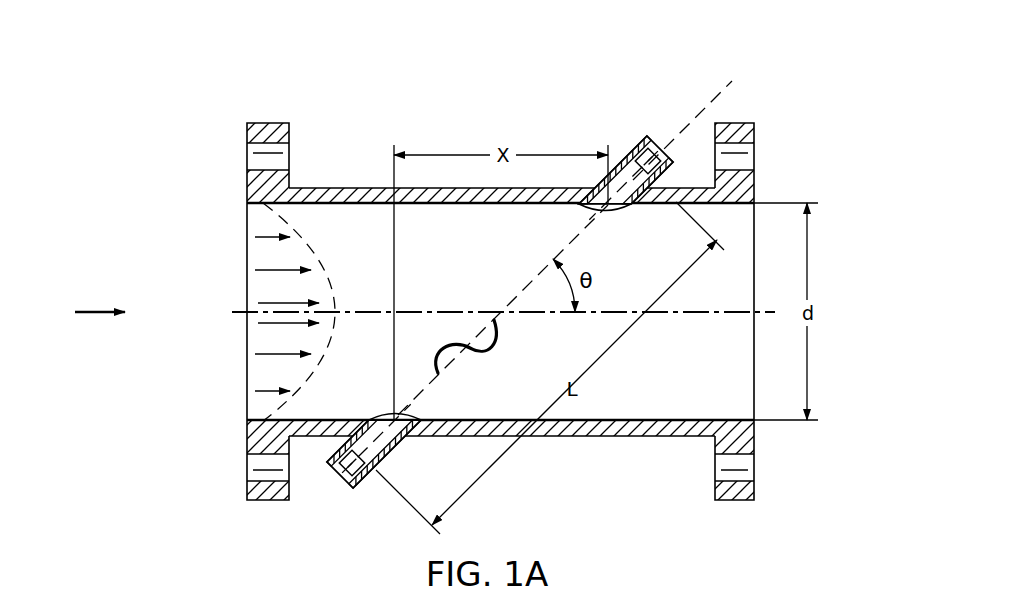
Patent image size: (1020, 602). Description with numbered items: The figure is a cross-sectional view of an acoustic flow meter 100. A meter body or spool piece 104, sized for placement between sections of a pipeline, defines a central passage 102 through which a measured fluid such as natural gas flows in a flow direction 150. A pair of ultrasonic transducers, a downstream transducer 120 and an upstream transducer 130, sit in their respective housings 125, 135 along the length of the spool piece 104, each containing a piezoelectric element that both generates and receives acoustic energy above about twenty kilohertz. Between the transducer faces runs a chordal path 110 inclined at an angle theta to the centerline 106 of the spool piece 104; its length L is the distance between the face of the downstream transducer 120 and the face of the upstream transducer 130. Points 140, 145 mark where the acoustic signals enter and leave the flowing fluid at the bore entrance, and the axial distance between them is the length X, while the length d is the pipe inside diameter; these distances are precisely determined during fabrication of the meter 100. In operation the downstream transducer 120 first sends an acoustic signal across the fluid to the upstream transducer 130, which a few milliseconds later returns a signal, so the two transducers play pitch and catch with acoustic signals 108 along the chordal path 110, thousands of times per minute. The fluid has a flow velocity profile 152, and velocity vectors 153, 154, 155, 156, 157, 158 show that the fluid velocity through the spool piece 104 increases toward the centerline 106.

The acoustic flow meter 100 is at (732, 56).
The central passage 102 is at (500, 312).
The spool piece 104 is at (268, 123).
The centerline 106 is at (693, 316).
The acoustic signals 108 is at (484, 350).
The chordal path 110 is at (522, 291).
The downstream transducer 120 is at (615, 171).
The transducer housing 125 is at (631, 150).
The upstream transducer 130 is at (395, 447).
The transducer housing 135 is at (390, 467).
The entry/exit point 140 is at (608, 207).
The entry/exit point 145 is at (384, 418).
The flow direction 150 is at (96, 311).
The flow velocity profile 152 is at (324, 260).
The velocity vector 153 is at (283, 237).
The velocity vector 154 is at (290, 270).
The velocity vector 155 is at (290, 303).
The velocity vector 156 is at (290, 323).
The velocity vector 157 is at (290, 354).
The velocity vector 158 is at (283, 391).